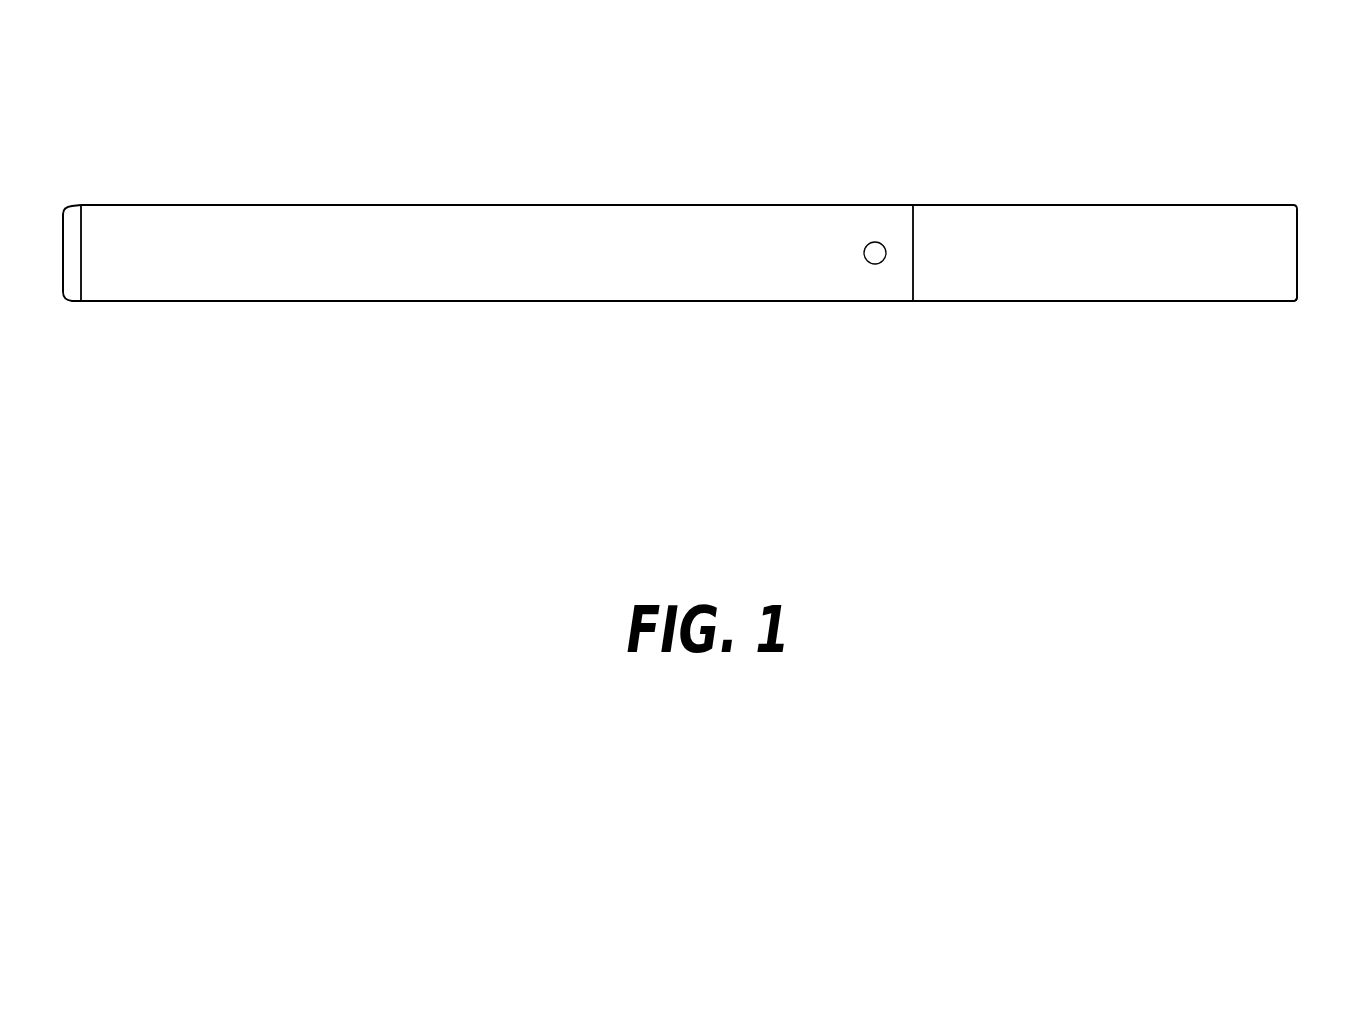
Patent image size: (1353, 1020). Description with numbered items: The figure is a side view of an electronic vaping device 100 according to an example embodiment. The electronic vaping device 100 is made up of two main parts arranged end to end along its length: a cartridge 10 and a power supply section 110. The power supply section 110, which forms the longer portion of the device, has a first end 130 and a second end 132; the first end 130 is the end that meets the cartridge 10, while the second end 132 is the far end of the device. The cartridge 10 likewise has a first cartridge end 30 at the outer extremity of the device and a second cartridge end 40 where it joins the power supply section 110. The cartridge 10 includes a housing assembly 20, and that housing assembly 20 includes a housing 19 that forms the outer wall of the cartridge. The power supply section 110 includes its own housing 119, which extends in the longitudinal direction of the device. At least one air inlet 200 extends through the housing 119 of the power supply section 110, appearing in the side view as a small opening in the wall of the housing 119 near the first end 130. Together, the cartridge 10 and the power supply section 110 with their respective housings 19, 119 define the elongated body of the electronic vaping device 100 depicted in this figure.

The electronic vaping device 100 is at (832, 188).
The power supply section 110 is at (612, 205).
The first end 130 is at (905, 205).
The second end 132 is at (86, 190).
The second cartridge end 40 is at (955, 205).
The housing assembly 20 is at (1165, 188).
The first cartridge end 30 is at (1277, 205).
The cartridge 10 is at (1172, 303).
The housing 19 is at (1257, 303).
The housing 119 is at (667, 303).
The air inlet 200 is at (880, 263).